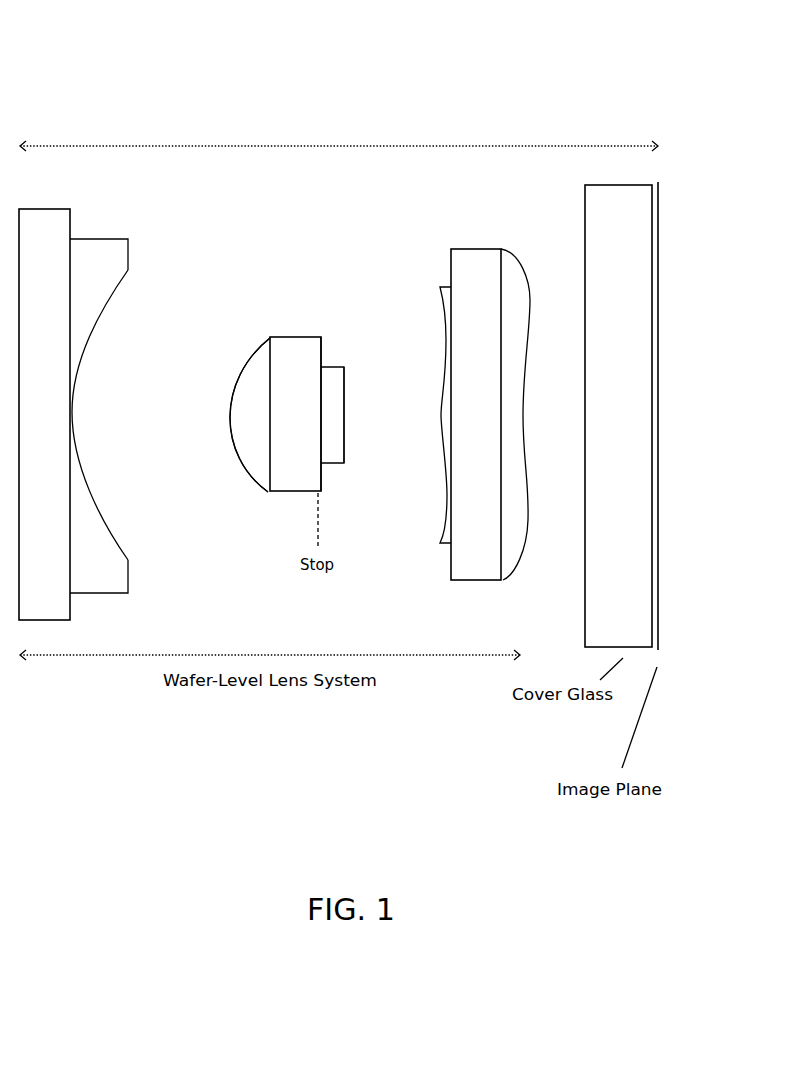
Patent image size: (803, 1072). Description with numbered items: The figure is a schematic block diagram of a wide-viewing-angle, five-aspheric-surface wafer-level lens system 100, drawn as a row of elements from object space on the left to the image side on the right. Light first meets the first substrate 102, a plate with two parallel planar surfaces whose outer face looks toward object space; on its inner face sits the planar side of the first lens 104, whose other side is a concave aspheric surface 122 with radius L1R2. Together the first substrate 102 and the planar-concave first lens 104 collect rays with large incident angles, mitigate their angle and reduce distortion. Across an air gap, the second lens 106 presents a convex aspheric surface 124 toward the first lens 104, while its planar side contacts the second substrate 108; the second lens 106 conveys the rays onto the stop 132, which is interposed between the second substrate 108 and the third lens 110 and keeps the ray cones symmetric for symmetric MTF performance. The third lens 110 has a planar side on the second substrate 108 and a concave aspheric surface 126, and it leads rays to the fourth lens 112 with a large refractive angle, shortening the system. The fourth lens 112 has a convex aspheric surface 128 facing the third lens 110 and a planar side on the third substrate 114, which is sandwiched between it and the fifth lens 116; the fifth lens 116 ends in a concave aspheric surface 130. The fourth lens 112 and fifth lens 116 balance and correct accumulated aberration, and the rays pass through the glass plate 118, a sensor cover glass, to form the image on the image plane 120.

The lens system 100 is at (145, 38).
The first substrate 102 is at (55, 601).
The first lens 104 is at (112, 575).
The second lens 106 is at (263, 423).
The second substrate 108 is at (310, 461).
The third lens 110 is at (343, 365).
The fourth lens 112 is at (442, 288).
The third substrate 114 is at (490, 563).
The fifth lens 116 is at (513, 250).
The glass plate 118 is at (633, 626).
The image plane 120 is at (657, 230).
The concave aspheric surface 122 is at (102, 518).
The convex aspheric surface 124 is at (250, 353).
The concave aspheric surface 126 is at (340, 423).
The convex aspheric surface 128 is at (443, 470).
The concave aspheric surface 130 is at (525, 487).
The stop 132 is at (318, 342).